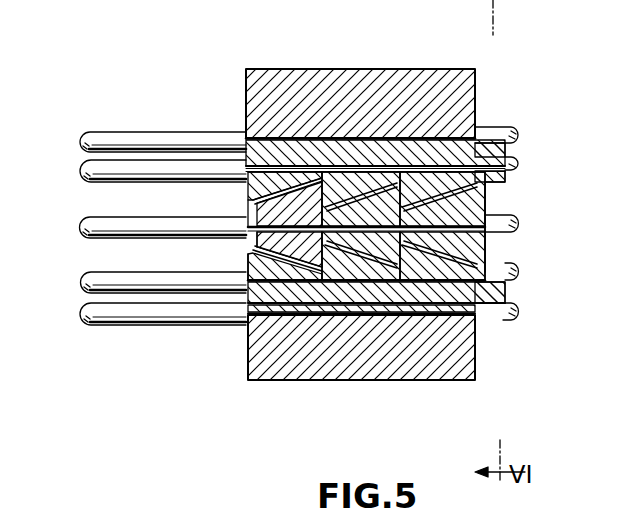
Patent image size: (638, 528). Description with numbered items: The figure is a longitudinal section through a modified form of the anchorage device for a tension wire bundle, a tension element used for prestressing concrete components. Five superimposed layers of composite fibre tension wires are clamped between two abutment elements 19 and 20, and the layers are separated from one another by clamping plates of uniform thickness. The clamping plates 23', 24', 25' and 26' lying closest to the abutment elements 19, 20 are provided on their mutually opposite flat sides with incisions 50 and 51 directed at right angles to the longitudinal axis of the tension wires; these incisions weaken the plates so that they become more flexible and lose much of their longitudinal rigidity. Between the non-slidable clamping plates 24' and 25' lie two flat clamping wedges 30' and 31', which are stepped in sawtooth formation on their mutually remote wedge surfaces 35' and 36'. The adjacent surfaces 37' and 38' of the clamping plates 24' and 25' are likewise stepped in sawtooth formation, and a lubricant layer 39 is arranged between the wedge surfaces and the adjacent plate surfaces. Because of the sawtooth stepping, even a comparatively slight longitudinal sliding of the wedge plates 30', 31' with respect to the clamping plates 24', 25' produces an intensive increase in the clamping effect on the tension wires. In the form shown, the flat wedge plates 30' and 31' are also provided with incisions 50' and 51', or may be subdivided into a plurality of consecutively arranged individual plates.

The abutment element 19 is at (402, 83).
The abutment element 20 is at (340, 343).
The clamping plate 23' is at (375, 102).
The clamping plate 24' is at (476, 101).
The clamping plate 25' is at (478, 355).
The clamping plate 26' is at (376, 350).
The clamping wedge 30' is at (539, 234).
The clamping wedge 31' is at (544, 272).
The wedge surface 35' is at (299, 126).
The wedge surface 36' is at (257, 235).
The sliding surface 37' is at (282, 114).
The sliding surface 38' is at (299, 353).
The lubricant layer 39 is at (487, 185).
The incision 50 is at (342, 246).
The incision 50' is at (411, 228).
The incision 51 is at (365, 238).
The incision 51' is at (411, 307).